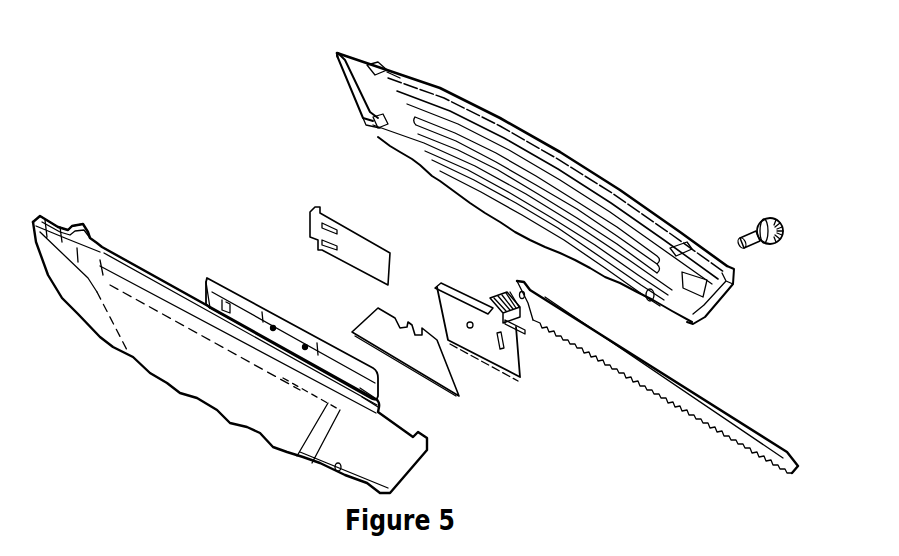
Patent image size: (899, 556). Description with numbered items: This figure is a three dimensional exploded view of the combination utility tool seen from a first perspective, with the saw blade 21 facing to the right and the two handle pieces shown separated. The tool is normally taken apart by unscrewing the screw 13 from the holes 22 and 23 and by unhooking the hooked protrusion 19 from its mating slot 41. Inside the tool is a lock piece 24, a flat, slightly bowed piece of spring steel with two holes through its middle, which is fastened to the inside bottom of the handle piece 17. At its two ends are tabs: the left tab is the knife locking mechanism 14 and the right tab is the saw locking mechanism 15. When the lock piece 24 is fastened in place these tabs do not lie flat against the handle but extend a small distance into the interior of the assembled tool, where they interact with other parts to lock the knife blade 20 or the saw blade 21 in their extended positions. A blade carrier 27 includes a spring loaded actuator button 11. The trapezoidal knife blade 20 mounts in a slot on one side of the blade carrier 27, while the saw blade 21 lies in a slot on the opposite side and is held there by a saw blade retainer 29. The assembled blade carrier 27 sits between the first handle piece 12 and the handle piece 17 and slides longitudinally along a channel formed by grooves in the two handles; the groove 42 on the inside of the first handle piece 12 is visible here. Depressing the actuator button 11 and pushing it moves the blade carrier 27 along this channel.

The actuator button 11 is at (489, 296).
The first handle piece 12 is at (512, 190).
The screw 13 is at (757, 211).
The knife locking mechanism 14 is at (202, 291).
The saw locking mechanism 15 is at (389, 400).
The handle piece 17 is at (256, 333).
The hooked protrusion 19 is at (88, 226).
The knife blade 20 is at (438, 372).
The saw blade 21 is at (645, 364).
The hole 22 is at (328, 476).
The hole 23 is at (653, 306).
The lock piece 24 is at (260, 311).
The blade carrier 27 is at (503, 373).
The saw blade retainer 29 is at (304, 215).
The slot 41 is at (385, 56).
The groove 42 is at (431, 141).